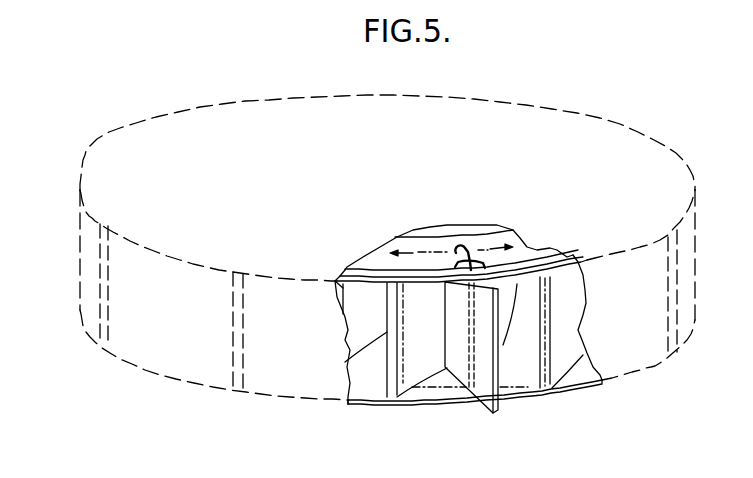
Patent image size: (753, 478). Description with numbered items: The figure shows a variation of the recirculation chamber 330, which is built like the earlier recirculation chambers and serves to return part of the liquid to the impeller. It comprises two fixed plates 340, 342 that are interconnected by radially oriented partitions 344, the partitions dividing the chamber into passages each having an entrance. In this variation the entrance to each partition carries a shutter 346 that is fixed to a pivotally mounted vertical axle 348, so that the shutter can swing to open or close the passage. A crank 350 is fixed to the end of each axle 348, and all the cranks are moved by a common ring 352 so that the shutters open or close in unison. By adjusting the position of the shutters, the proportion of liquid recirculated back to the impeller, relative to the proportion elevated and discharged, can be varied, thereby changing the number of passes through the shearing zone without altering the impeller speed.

The recirculation chamber 330 is at (81, 262).
The fixed plate 340 is at (370, 404).
The fixed plate 342 is at (364, 277).
The radially oriented partition 344 is at (399, 367).
The shutter 346 is at (458, 373).
The vertical axle 348 is at (473, 357).
The crank 350 is at (467, 243).
The common ring 352 is at (516, 262).